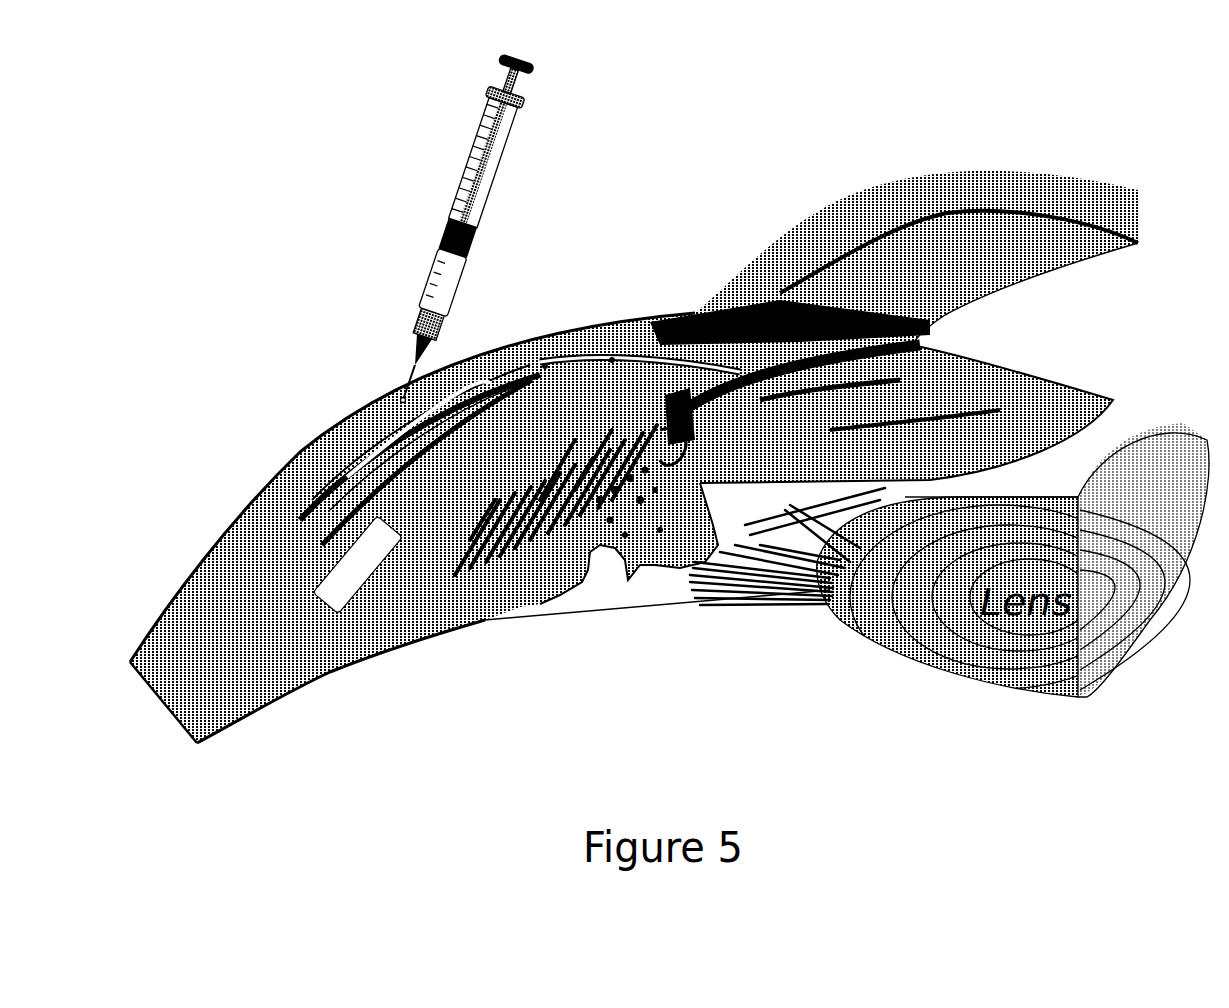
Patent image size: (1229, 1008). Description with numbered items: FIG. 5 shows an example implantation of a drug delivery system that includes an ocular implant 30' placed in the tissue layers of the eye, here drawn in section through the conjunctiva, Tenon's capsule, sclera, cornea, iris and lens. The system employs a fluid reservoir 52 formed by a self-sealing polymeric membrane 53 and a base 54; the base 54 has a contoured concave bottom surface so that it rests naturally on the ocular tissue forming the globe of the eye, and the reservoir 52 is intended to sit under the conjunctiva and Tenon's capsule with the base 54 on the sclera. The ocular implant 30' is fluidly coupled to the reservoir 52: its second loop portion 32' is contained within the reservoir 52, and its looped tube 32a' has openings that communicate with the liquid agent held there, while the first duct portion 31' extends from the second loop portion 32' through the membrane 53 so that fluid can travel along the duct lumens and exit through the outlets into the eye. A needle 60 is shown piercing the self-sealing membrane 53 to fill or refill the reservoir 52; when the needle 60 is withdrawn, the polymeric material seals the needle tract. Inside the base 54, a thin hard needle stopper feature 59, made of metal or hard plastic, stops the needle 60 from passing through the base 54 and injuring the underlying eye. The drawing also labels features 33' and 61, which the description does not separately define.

The ocular implant 30' is at (630, 404).
The first duct portion 31' is at (543, 316).
The second loop portion 32' is at (480, 555).
The looped tube 32a' is at (427, 554).
The implant inlet region 33' is at (533, 316).
The fluid reservoir 52 is at (300, 450).
The self-sealing polymeric membrane 53 is at (325, 427).
The base 54 is at (535, 607).
The needle stopper feature 59 is at (350, 412).
The needle 60 is at (398, 244).
The needle 61 is at (385, 392).